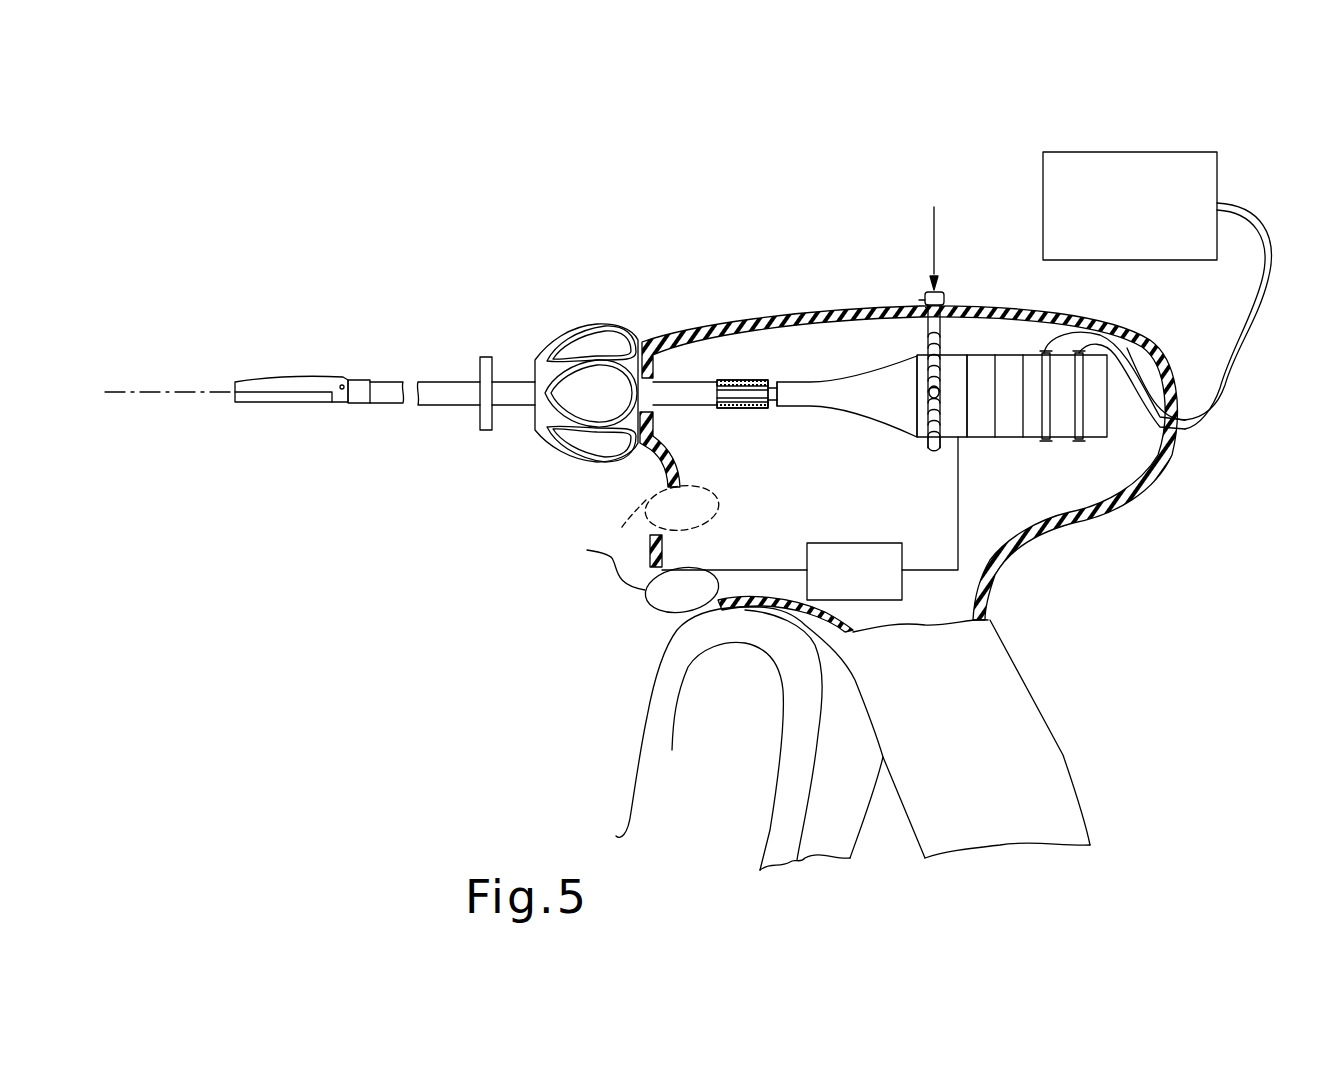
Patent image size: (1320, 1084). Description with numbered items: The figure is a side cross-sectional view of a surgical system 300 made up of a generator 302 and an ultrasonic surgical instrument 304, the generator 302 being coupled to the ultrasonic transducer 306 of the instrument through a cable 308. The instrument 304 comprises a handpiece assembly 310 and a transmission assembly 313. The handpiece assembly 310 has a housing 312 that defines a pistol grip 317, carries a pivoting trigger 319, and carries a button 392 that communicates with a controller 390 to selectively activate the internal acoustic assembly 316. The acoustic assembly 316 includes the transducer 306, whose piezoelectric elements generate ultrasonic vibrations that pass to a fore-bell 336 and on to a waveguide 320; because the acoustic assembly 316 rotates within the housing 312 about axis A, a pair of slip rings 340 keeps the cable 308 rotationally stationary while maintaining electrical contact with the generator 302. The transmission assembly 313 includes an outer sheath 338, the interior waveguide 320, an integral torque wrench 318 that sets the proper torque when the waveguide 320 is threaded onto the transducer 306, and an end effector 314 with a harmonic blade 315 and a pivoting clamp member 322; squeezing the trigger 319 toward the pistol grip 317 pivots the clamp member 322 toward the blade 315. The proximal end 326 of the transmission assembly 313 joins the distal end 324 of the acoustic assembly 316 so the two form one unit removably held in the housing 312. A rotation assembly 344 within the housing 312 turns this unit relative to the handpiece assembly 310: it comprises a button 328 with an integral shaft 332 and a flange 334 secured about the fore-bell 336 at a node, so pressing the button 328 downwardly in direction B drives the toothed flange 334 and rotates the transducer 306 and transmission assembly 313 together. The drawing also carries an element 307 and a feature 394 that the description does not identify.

The surgical system 300 is at (403, 184).
The generator 302 is at (1048, 137).
The ultrasonic surgical instrument 304 is at (537, 627).
The ultrasonic transducer 306 is at (982, 462).
The piezoelectric transducer stack 307 is at (982, 432).
The cable 308 is at (1228, 338).
The handpiece assembly 310 is at (1088, 575).
The housing 312 is at (943, 528).
The transmission assembly 313 is at (740, 372).
The end effector 314 is at (303, 338).
The harmonic blade 315 is at (283, 405).
The acoustic assembly 316 is at (862, 455).
The pistol grip 317 is at (1070, 758).
The integral torque wrench 318 is at (485, 438).
The pivoting trigger 319 is at (757, 823).
The waveguide 320 is at (738, 410).
The clamp member 322 is at (265, 378).
The distal end 324 is at (775, 373).
The proximal end 326 is at (797, 395).
The button 328 is at (950, 298).
The shaft 332 is at (925, 333).
The flange 334 is at (925, 445).
The fore-bell 336 is at (958, 356).
The outer sheath 338 is at (444, 378).
The slip rings 340 is at (1045, 440).
The rotation assembly 344 is at (908, 280).
The controller 390 is at (822, 543).
The button 392 is at (643, 528).
The housing opening 394 is at (1197, 430).
The axis A is at (122, 400).
The direction B is at (933, 238).